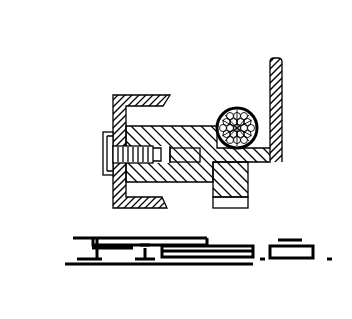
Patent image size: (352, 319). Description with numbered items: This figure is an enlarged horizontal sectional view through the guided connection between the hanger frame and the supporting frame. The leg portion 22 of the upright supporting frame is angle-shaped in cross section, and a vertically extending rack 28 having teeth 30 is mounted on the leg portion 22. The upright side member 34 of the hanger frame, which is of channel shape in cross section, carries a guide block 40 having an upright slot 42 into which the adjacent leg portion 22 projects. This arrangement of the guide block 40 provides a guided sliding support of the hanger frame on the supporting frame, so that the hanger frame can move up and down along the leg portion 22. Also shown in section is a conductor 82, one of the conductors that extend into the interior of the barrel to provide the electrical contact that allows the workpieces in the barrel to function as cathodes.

The leg portion 22 is at (282, 103).
The rack 28 is at (233, 182).
The teeth 30 is at (236, 208).
The side member 34 is at (112, 190).
The guide block 40 is at (151, 127).
The slot 42 is at (182, 151).
The conductor 82 is at (237, 108).